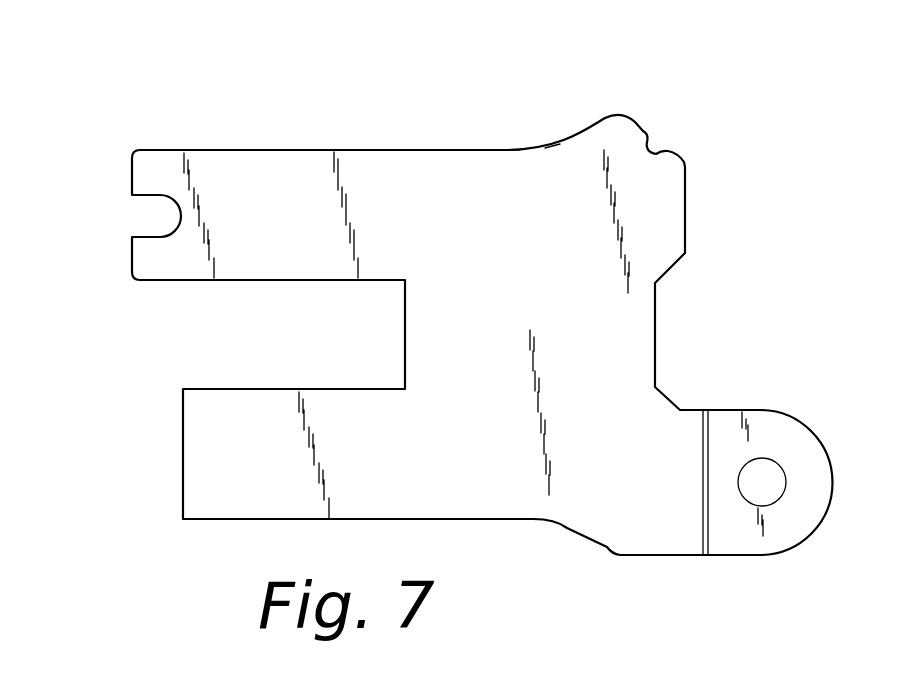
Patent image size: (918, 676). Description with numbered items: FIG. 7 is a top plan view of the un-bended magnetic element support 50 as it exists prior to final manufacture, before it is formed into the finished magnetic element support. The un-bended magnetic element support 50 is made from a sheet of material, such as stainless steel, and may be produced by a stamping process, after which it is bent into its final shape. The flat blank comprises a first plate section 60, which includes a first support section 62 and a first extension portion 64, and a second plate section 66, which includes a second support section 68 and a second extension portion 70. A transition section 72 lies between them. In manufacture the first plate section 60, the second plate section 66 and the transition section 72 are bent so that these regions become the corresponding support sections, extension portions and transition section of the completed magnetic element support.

The un-bended magnetic element support 50 is at (148, 108).
The first plate section 60 is at (590, 498).
The first support section 62 is at (507, 487).
The first extension portion 64 is at (247, 497).
The second plate section 66 is at (569, 184).
The second support section 68 is at (512, 184).
The second extension portion 70 is at (250, 170).
The transition section 72 is at (597, 343).